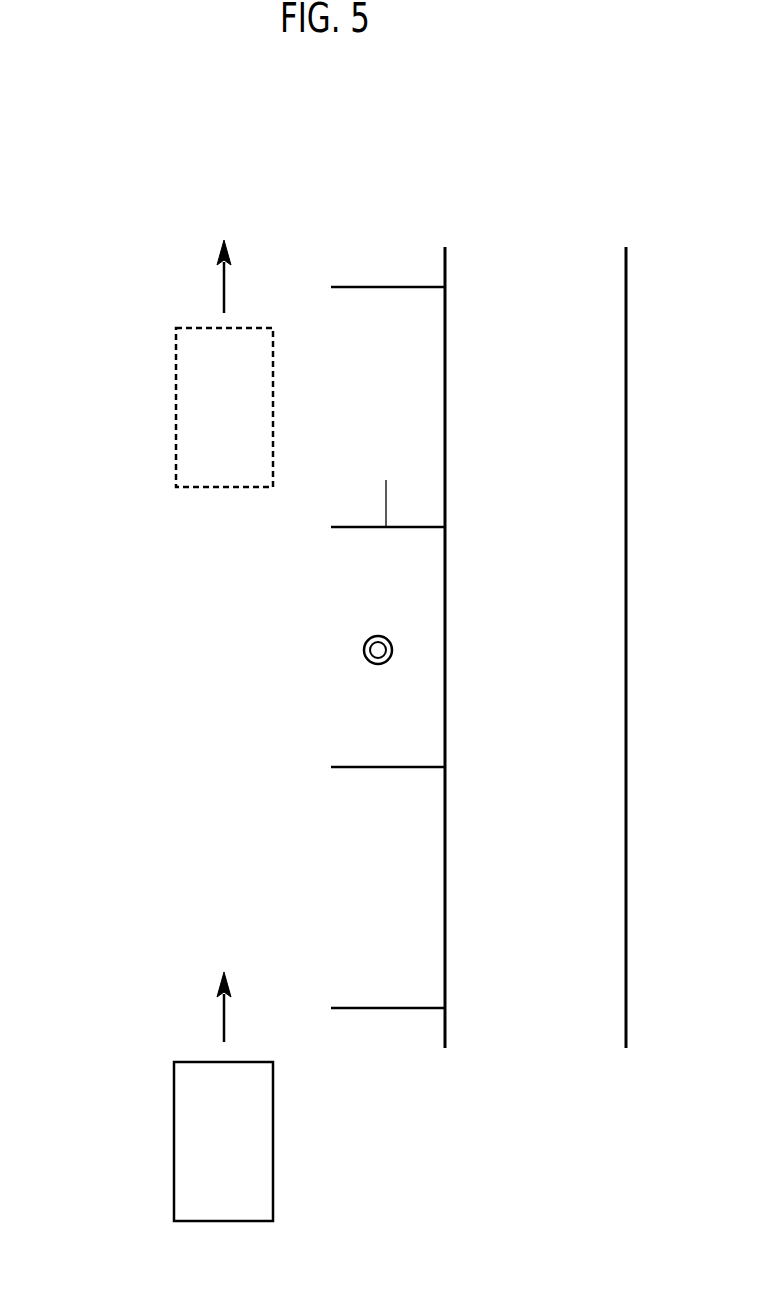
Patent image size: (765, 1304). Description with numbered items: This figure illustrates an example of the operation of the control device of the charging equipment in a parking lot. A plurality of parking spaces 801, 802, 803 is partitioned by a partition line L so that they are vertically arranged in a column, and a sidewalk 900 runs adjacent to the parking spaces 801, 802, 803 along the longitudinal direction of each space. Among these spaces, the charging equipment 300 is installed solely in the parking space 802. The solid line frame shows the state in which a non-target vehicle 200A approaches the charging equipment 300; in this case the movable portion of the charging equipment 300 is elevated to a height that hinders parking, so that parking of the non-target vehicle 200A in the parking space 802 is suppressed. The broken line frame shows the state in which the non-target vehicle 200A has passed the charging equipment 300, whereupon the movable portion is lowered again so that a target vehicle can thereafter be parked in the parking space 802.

The sidewalk 900 is at (535, 263).
The parking space 803 is at (342, 330).
The parking space 802 is at (342, 557).
The parking space 801 is at (342, 792).
The partition line L is at (386, 526).
The charging equipment 300 is at (375, 635).
The non-target vehicle 200A is at (176, 414).